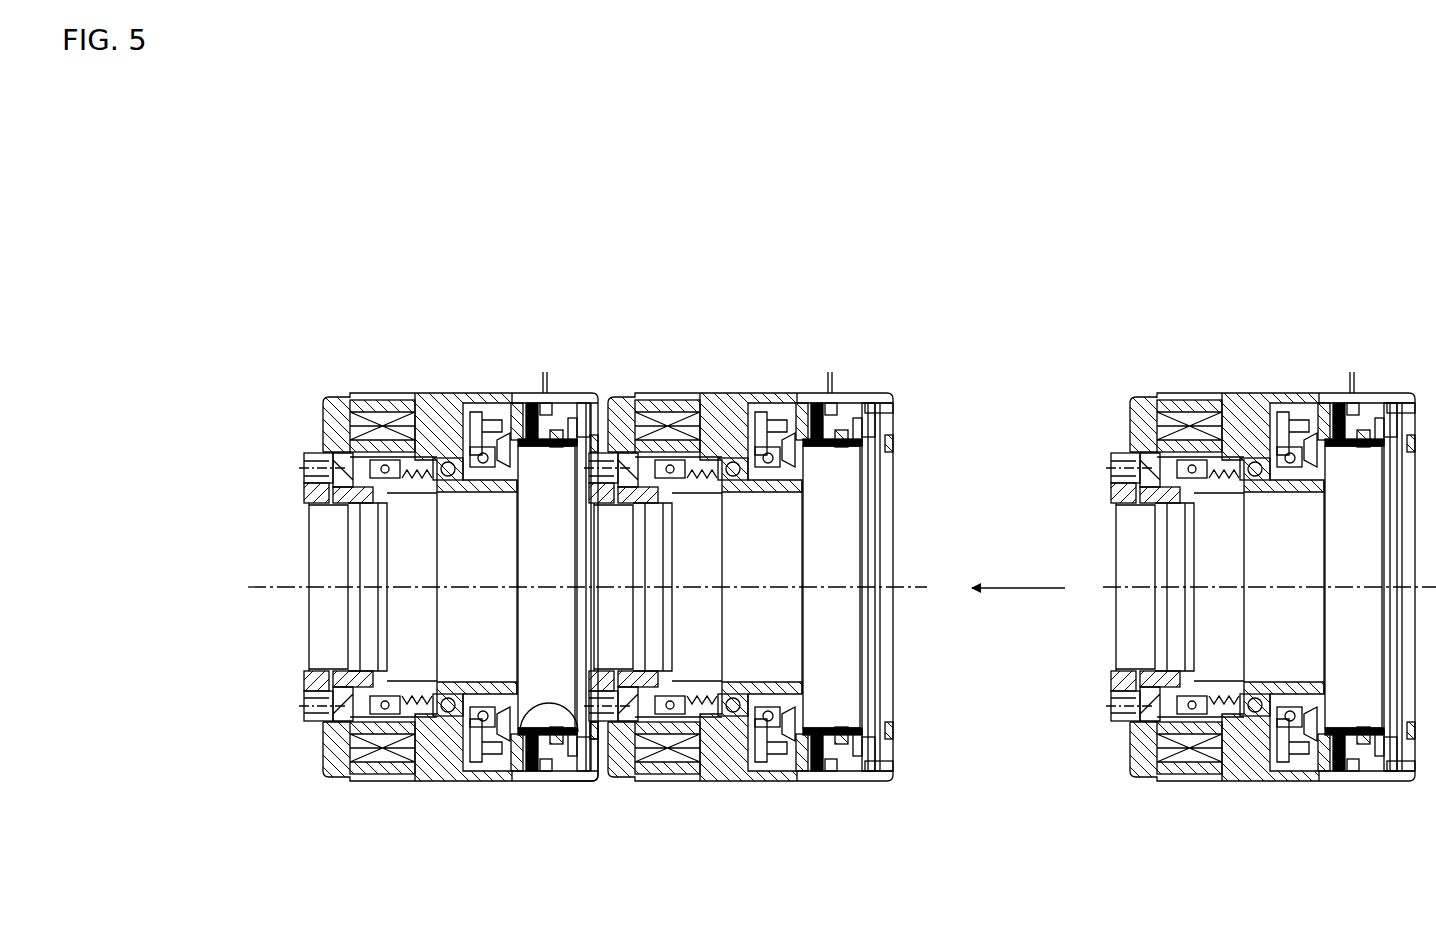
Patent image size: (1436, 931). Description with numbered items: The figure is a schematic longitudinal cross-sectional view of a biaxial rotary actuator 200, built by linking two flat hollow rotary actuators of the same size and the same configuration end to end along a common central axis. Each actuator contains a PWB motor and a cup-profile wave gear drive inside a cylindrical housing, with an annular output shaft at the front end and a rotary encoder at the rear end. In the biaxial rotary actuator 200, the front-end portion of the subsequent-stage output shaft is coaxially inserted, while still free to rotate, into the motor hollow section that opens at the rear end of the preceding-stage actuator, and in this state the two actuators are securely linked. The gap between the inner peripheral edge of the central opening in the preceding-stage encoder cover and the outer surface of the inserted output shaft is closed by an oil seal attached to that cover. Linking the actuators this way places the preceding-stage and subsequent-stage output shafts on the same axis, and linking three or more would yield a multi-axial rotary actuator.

The biaxial rotary actuator 200 is at (725, 195).